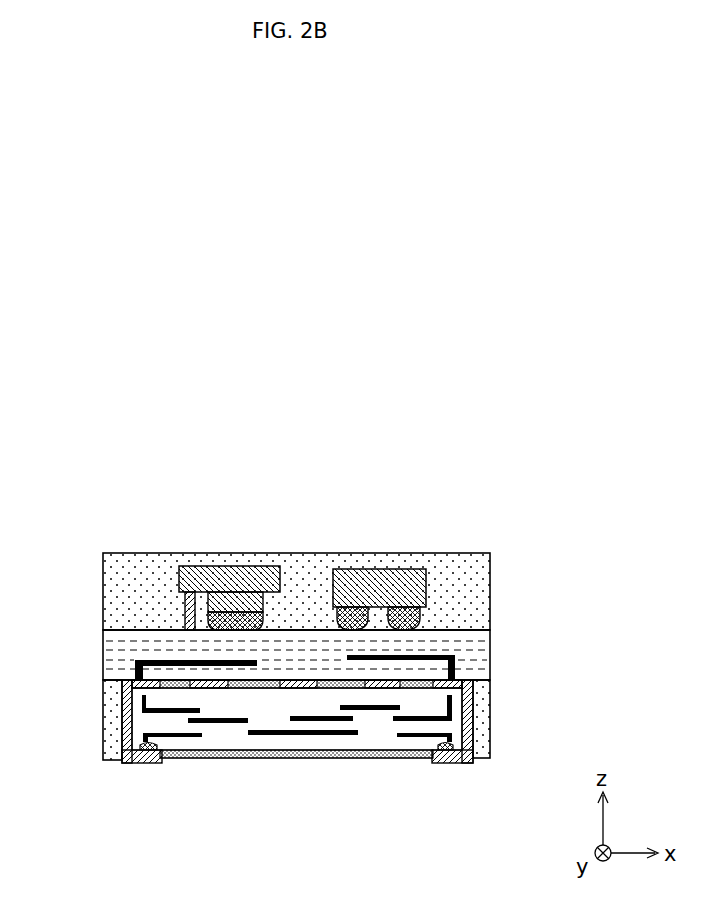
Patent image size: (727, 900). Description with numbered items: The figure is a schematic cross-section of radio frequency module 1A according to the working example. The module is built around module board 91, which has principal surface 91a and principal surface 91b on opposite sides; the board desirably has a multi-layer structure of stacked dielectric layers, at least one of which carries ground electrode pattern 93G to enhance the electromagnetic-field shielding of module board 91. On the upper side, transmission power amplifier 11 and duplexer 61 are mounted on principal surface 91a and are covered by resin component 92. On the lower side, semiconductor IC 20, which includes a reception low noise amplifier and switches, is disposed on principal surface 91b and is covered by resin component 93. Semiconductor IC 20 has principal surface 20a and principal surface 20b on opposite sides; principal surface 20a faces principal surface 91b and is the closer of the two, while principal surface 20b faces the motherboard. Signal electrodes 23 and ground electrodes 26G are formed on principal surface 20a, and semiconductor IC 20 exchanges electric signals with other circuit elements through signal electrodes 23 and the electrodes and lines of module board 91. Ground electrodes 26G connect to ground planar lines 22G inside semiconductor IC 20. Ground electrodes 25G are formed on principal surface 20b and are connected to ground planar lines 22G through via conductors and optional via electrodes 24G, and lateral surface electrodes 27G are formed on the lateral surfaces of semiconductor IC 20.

The radio frequency module 1A is at (500, 498).
The resin component 92 is at (490, 570).
The transmission power amplifier 11 is at (242, 566).
The duplexer 61 is at (378, 569).
The principal surface 20a is at (332, 680).
The module board 91 is at (485, 647).
The principal surface 91a is at (477, 620).
The principal surface 91b is at (487, 686).
The ground electrode pattern 93G is at (136, 666).
The ground electrodes 26G is at (122, 688).
The lateral surface electrodes 27G is at (125, 718).
The resin component 93 is at (482, 722).
The ground electrodes 25G is at (140, 766).
The via electrodes 24G is at (165, 764).
The ground planar lines 22G is at (178, 737).
The signal electrodes 23 is at (385, 697).
The semiconductor IC 20 is at (215, 738).
The principal surface 20b is at (353, 758).